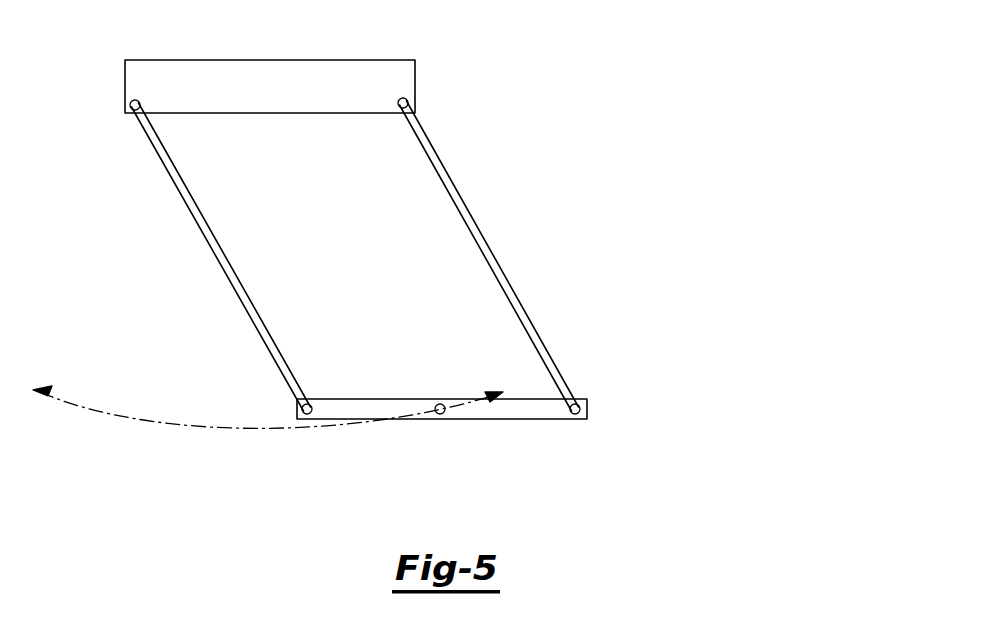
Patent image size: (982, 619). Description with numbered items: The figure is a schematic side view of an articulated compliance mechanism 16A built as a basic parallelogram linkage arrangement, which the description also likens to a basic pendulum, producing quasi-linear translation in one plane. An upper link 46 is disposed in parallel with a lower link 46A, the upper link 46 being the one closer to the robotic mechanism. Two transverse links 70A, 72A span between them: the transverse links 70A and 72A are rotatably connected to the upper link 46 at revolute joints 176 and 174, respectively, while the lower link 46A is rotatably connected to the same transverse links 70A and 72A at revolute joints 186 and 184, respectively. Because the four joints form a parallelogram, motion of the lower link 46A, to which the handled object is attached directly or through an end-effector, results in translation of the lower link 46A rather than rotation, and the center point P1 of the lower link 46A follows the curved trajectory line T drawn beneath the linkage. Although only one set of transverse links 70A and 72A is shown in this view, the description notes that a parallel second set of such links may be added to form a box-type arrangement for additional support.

The articulated compliance mechanism 16A is at (555, 114).
The upper link 46 is at (235, 73).
The lower link 46A is at (355, 399).
The transverse link 70A is at (537, 322).
The transverse link 72A is at (255, 290).
The revolute joint 174 is at (130, 105).
The revolute joint 176 is at (408, 103).
The revolute joint 184 is at (300, 410).
The revolute joint 186 is at (583, 410).
The center point P1 is at (443, 414).
The curved trajectory line T is at (176, 423).